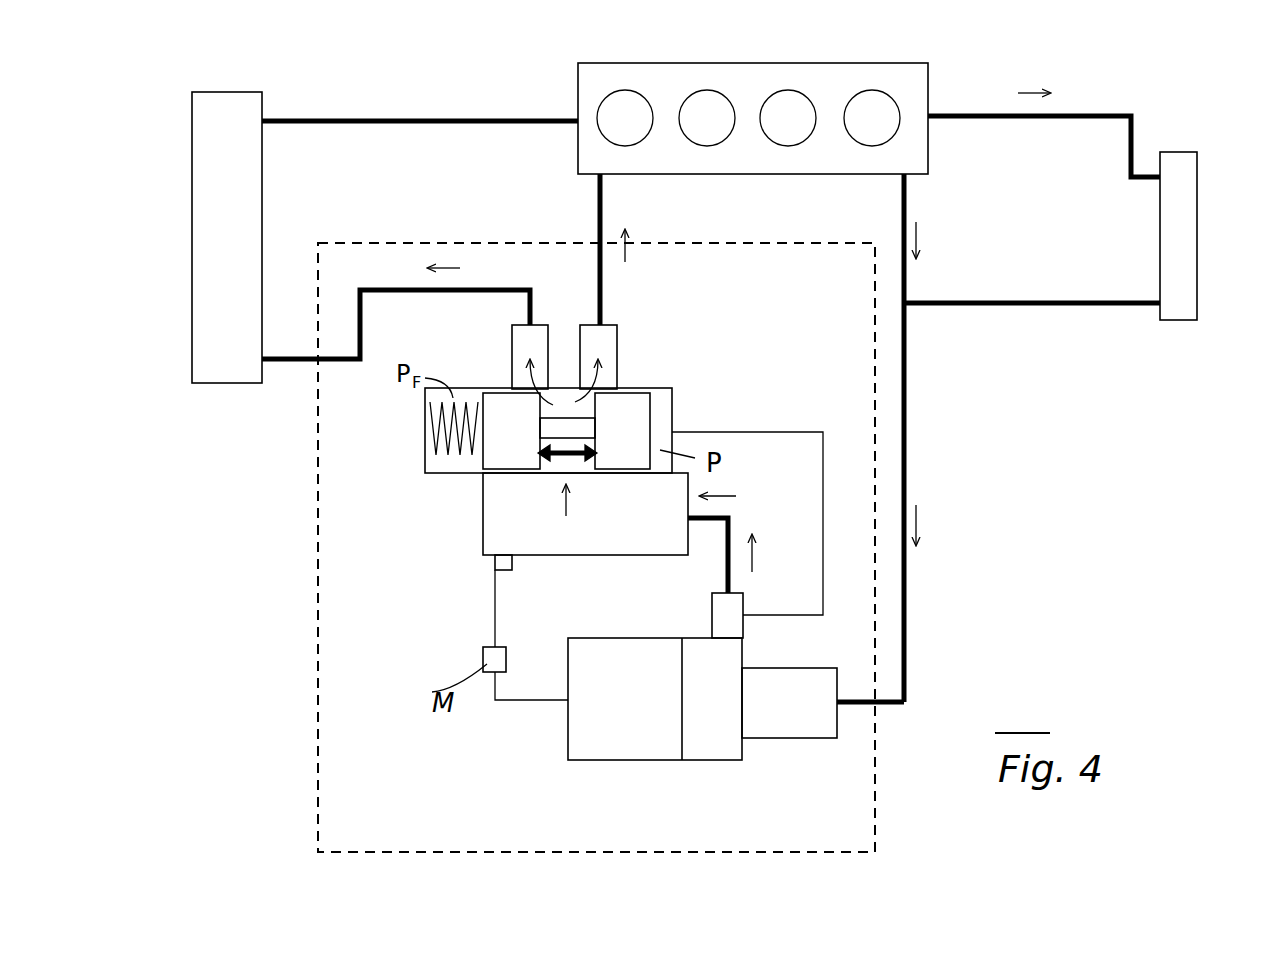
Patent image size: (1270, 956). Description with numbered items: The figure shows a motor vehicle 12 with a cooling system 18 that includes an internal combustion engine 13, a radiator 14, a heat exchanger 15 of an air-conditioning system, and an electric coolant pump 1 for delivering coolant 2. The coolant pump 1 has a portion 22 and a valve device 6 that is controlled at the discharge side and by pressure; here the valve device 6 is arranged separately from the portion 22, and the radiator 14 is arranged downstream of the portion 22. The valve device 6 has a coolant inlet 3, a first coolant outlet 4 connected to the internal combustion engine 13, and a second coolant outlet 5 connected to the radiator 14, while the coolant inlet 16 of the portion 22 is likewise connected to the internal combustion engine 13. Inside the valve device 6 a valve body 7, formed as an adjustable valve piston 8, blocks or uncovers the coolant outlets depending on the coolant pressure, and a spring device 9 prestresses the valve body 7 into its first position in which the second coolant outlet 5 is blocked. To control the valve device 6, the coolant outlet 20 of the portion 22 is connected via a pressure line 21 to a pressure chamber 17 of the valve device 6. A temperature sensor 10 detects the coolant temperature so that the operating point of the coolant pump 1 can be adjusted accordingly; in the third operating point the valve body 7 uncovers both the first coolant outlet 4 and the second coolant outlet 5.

The electric coolant pump 1 is at (316, 536).
The coolant 2 is at (398, 102).
The coolant inlet 3 is at (690, 523).
The first coolant outlet 4 is at (605, 325).
The second coolant outlet 5 is at (530, 316).
The valve device 6 is at (457, 492).
The valve body 7 is at (622, 405).
The valve piston 8 is at (594, 431).
The spring device 9 is at (440, 425).
The temperature sensor 10 is at (510, 572).
The motor vehicle 12 is at (392, 213).
The internal combustion engine 13 is at (808, 76).
The radiator 14 is at (240, 226).
The heat exchanger 15 is at (1180, 236).
The coolant inlet 16 is at (838, 705).
The pressure chamber 17 is at (660, 410).
The cooling system 18 is at (478, 122).
The coolant outlet 20 is at (735, 589).
The pressure line 21 is at (798, 432).
The portion 22 is at (642, 760).